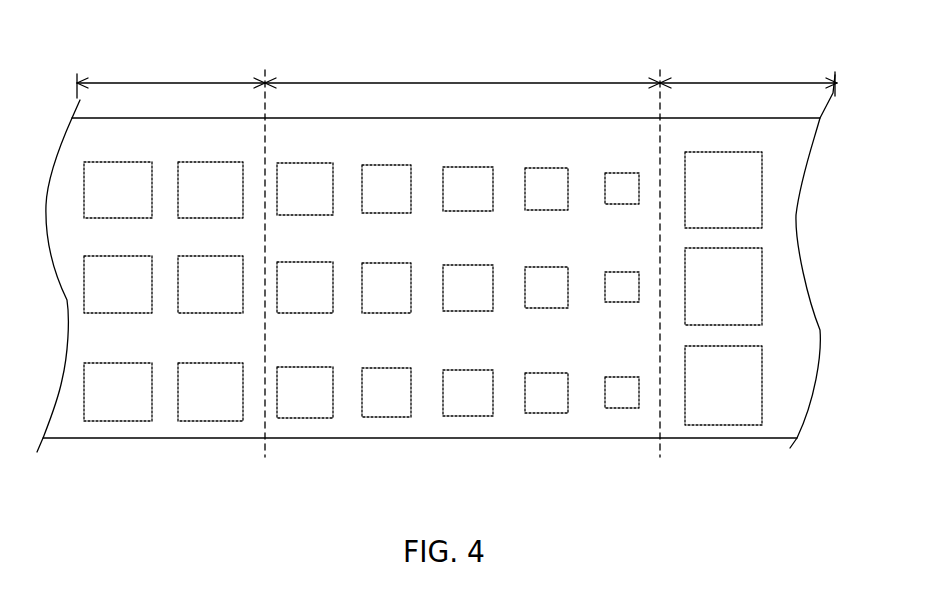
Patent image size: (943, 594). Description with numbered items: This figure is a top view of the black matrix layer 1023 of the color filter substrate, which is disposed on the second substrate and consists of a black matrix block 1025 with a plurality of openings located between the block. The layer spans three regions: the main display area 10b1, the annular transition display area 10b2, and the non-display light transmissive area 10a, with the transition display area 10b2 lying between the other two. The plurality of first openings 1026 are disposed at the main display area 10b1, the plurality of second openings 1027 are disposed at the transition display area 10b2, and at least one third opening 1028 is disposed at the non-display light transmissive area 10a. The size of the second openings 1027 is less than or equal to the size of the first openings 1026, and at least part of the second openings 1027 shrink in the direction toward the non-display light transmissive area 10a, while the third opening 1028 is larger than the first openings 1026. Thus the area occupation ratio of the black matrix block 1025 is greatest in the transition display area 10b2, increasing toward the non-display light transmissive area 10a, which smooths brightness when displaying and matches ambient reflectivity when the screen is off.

The black matrix layer 1023 is at (465, 32).
The main display area 10b1 is at (171, 75).
The transition display area 10b2 is at (462, 70).
The non-display light transmissive area 10a is at (748, 74).
The black matrix block 1025 is at (163, 407).
The first openings 1026 is at (222, 400).
The second openings 1027 is at (307, 398).
The third opening 1028 is at (707, 392).